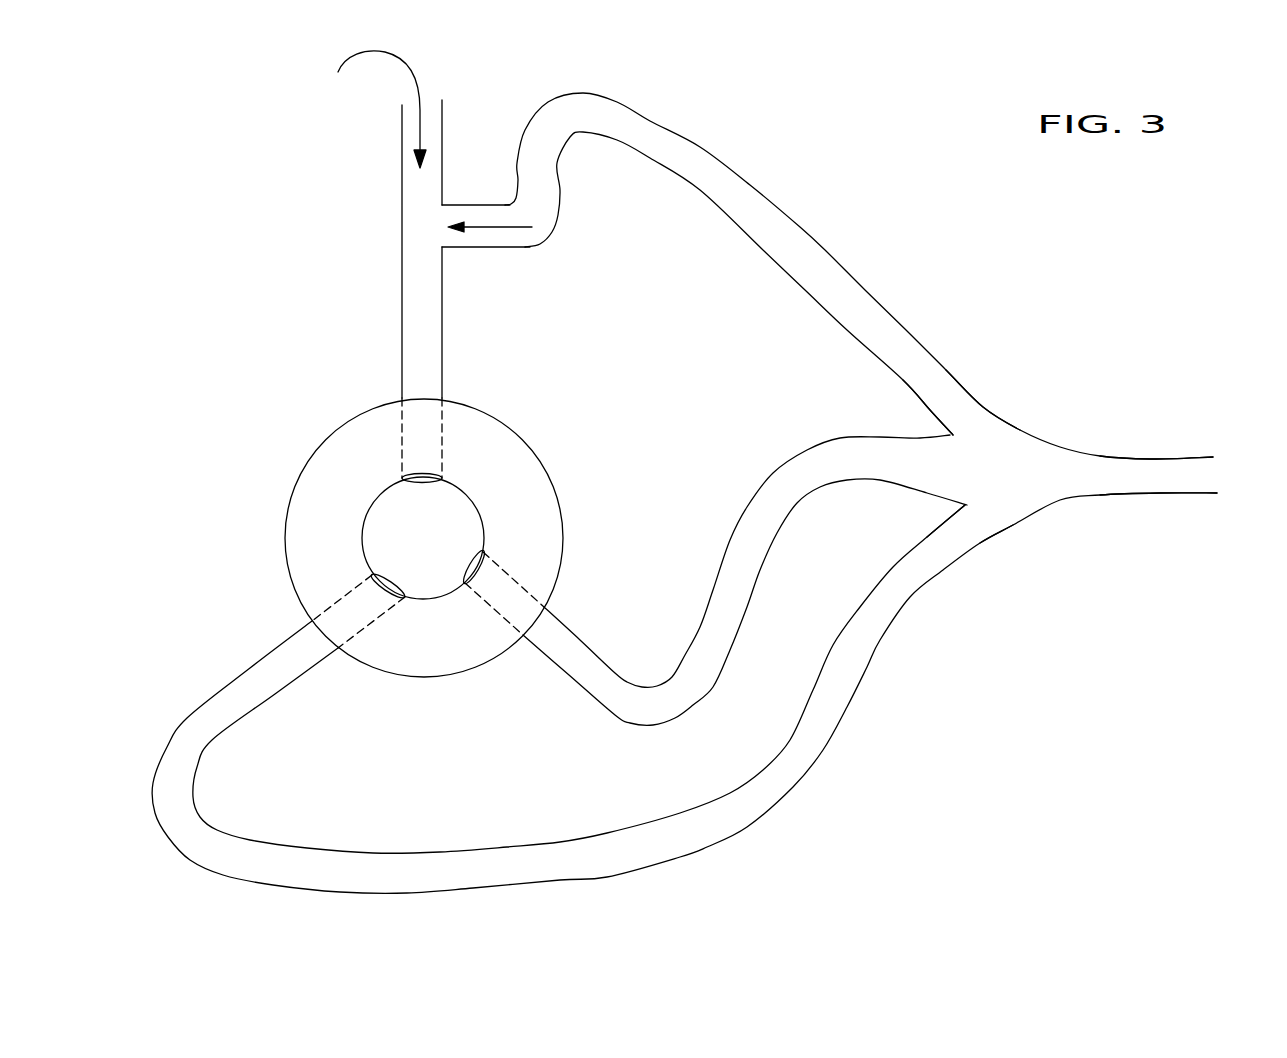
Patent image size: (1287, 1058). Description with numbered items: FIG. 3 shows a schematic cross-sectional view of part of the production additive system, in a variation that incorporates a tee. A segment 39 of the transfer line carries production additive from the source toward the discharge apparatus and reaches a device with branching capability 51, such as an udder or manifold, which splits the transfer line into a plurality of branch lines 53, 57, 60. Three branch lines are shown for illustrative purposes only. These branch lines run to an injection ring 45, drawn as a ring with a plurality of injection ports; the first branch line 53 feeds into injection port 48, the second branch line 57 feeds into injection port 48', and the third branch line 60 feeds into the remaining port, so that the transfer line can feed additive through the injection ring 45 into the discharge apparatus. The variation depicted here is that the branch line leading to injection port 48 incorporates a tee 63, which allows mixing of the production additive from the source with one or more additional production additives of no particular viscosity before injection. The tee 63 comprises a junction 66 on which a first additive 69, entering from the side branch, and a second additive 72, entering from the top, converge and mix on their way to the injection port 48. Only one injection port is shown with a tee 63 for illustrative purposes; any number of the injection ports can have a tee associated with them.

The transfer line segment 39 is at (1142, 477).
The injection ring 45 is at (515, 505).
The injection port 48 is at (496, 432).
The injection port 48' is at (555, 566).
The device with branching capability 51 is at (995, 475).
The branch line 53 is at (682, 162).
The branch line 57 is at (753, 525).
The branch line 60 is at (840, 692).
The tee 63 is at (373, 227).
The junction 66 is at (418, 235).
The first additive 69 is at (498, 227).
The second additive 72 is at (407, 138).